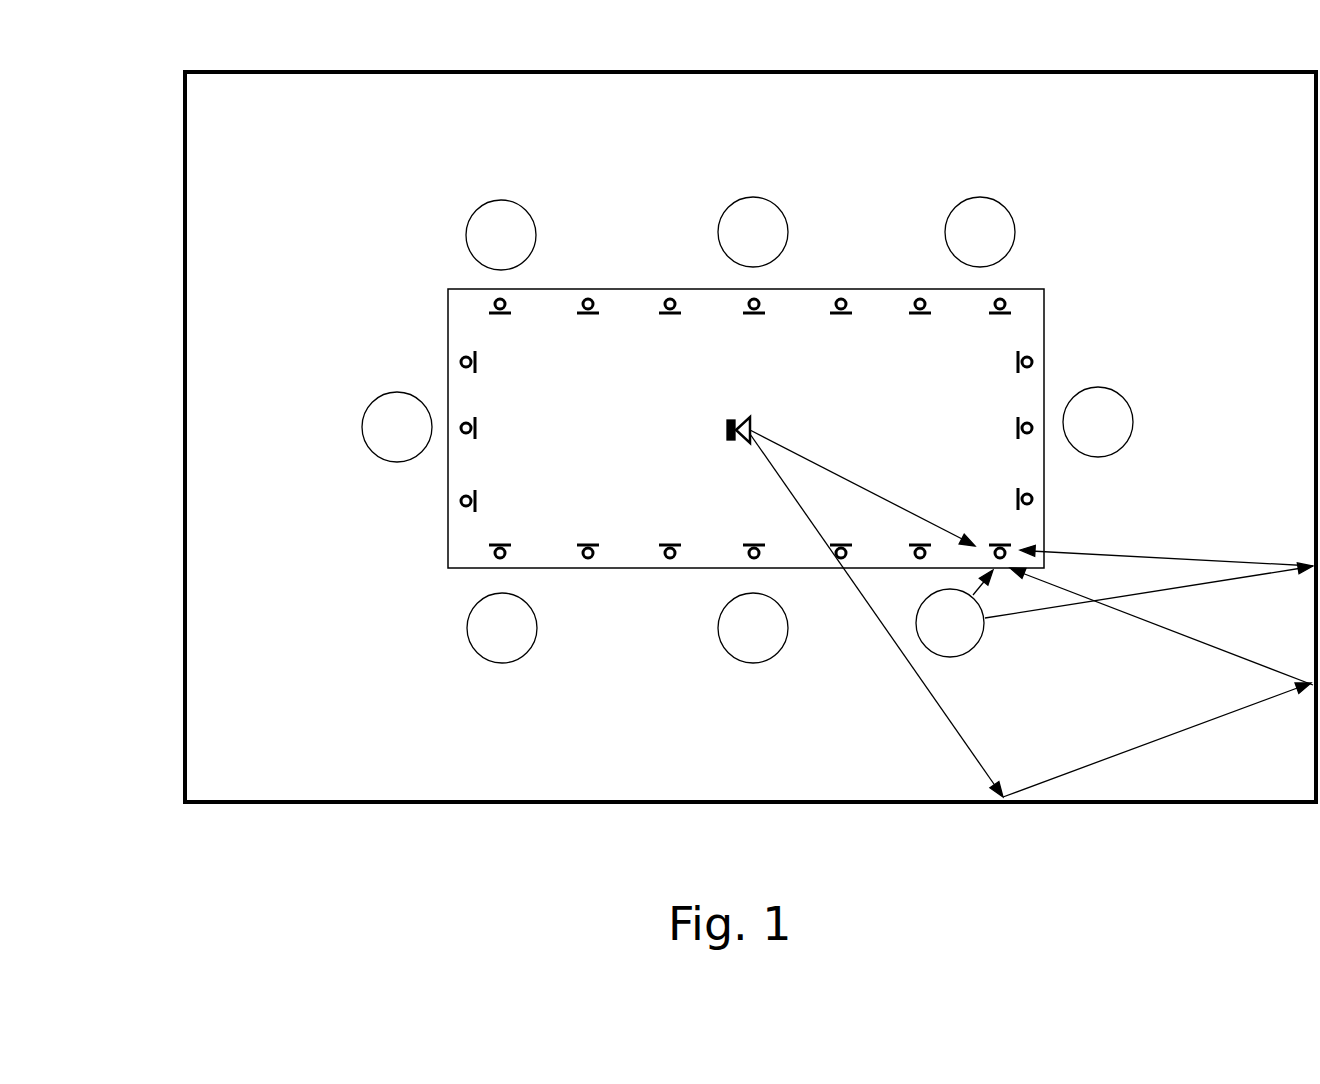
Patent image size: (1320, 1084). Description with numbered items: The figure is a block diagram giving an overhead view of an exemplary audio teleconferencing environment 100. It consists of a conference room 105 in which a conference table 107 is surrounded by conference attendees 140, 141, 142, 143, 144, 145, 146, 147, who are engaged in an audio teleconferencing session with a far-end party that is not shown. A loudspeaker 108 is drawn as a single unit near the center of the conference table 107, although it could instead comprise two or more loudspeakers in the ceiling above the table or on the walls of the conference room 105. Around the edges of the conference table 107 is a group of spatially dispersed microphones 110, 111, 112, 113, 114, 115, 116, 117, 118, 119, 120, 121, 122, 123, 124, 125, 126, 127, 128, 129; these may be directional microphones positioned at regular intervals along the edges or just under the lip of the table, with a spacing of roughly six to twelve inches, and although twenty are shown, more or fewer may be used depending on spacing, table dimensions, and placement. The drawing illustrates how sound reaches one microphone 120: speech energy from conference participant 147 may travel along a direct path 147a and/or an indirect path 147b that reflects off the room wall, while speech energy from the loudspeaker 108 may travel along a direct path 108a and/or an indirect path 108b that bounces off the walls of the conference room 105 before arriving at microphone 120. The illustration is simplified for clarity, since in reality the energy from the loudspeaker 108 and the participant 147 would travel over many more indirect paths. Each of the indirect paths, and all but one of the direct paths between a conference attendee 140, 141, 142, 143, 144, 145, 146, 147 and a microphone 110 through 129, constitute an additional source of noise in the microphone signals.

The audio teleconferencing environment 100 is at (99, 74).
The conference room 105 is at (172, 476).
The conference table 107 is at (448, 325).
The loudspeaker 108 is at (726, 423).
The direct path 108a is at (813, 462).
The indirect path 108b is at (1207, 648).
The microphone 110 is at (501, 319).
The microphone 111 is at (588, 319).
The microphone 112 is at (670, 319).
The microphone 113 is at (754, 319).
The microphone 114 is at (842, 319).
The microphone 115 is at (918, 319).
The microphone 116 is at (1003, 319).
The microphone 117 is at (1014, 360).
The microphone 118 is at (1016, 426).
The microphone 119 is at (1016, 497).
The microphone 120 is at (992, 544).
The microphone 121 is at (921, 540).
The microphone 122 is at (842, 540).
The microphone 123 is at (756, 540).
The microphone 124 is at (669, 540).
The microphone 125 is at (588, 540).
The microphone 126 is at (500, 540).
The microphone 127 is at (483, 500).
The microphone 128 is at (478, 428).
The microphone 129 is at (478, 364).
The conference attendee 140 is at (1098, 422).
The conference attendee 141 is at (980, 232).
The conference attendee 142 is at (753, 232).
The conference attendee 143 is at (501, 235).
The conference attendee 144 is at (397, 427).
The conference attendee 145 is at (502, 628).
The conference attendee 146 is at (753, 628).
The conference participant 147 is at (950, 623).
The direct path 147a is at (980, 584).
The indirect path 147b is at (1177, 550).